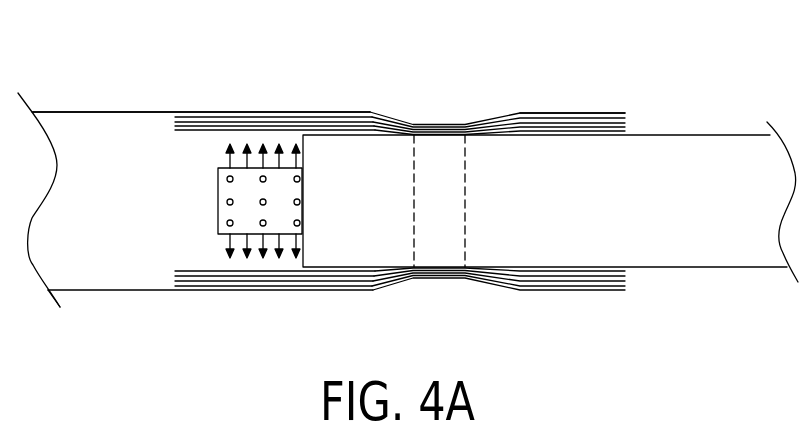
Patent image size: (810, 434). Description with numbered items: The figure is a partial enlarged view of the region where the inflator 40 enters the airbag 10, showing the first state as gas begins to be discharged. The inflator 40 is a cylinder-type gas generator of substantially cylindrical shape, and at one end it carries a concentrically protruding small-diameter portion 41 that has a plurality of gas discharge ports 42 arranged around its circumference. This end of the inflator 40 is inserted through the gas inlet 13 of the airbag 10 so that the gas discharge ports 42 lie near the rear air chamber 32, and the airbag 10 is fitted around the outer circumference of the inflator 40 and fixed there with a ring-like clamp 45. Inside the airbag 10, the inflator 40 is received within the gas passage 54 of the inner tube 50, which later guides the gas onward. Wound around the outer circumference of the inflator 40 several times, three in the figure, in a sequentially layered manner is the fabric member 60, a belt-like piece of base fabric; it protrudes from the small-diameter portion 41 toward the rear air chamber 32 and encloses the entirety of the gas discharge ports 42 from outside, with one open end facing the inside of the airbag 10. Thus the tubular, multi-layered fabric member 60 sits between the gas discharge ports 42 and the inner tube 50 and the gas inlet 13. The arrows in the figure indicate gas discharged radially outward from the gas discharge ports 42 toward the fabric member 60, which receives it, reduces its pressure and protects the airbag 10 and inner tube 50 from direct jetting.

The airbag 10 is at (197, 110).
The gas inlet 13 is at (526, 110).
The rear air chamber 32 is at (102, 305).
The inflator 40 is at (683, 135).
The small-diameter portion 41 is at (218, 223).
The gas discharge ports 42 is at (218, 177).
The clamp 45 is at (442, 145).
The inner tube 50 is at (147, 290).
The gas passage 54 is at (97, 130).
The fabric member 60 is at (257, 125).